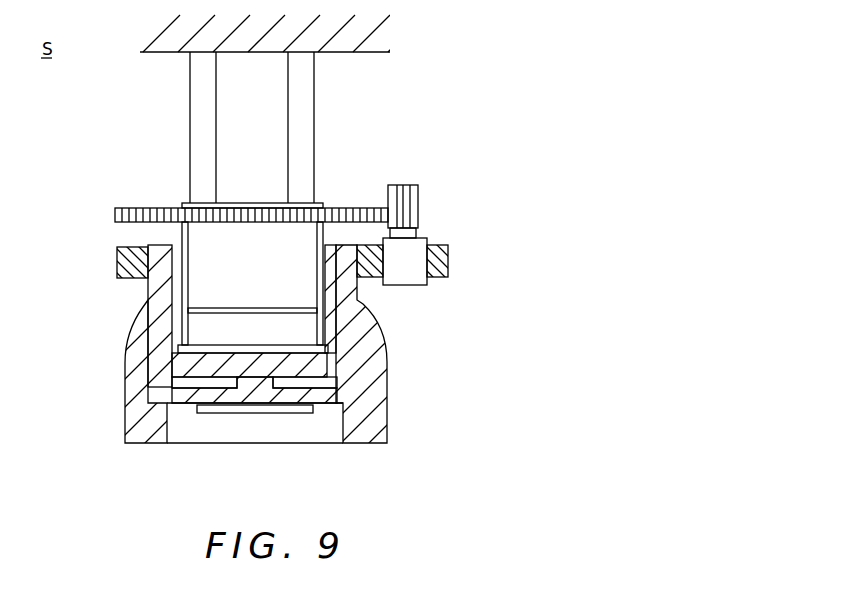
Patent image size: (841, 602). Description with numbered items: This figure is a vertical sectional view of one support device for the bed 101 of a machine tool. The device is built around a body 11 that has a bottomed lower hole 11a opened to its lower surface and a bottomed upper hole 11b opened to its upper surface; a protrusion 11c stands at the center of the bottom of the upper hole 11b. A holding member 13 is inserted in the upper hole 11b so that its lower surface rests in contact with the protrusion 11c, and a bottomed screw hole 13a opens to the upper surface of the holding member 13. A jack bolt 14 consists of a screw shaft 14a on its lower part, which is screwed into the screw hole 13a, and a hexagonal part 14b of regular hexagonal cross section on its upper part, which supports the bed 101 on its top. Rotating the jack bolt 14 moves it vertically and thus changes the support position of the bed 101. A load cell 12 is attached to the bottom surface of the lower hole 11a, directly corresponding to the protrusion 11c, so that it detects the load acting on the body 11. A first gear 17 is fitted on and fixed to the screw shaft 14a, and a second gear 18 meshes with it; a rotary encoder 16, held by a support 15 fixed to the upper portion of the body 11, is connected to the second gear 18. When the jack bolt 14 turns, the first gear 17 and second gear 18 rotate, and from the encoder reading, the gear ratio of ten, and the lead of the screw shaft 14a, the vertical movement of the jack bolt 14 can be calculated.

The bed 101 is at (388, 35).
The jack bolt 14 is at (314, 135).
The screw shaft 14a is at (182, 237).
The hexagonal part 14b is at (190, 150).
The first gear 17 is at (115, 208).
The second gear 18 is at (418, 217).
The rotary encoder 16 is at (413, 285).
The support 15 is at (448, 258).
The holding member 13 is at (178, 328).
The screw hole 13a is at (200, 310).
The body 11 is at (387, 390).
The lower hole 11a is at (177, 437).
The upper hole 11b is at (185, 362).
The protrusion 11c is at (172, 388).
The load cell 12 is at (260, 413).